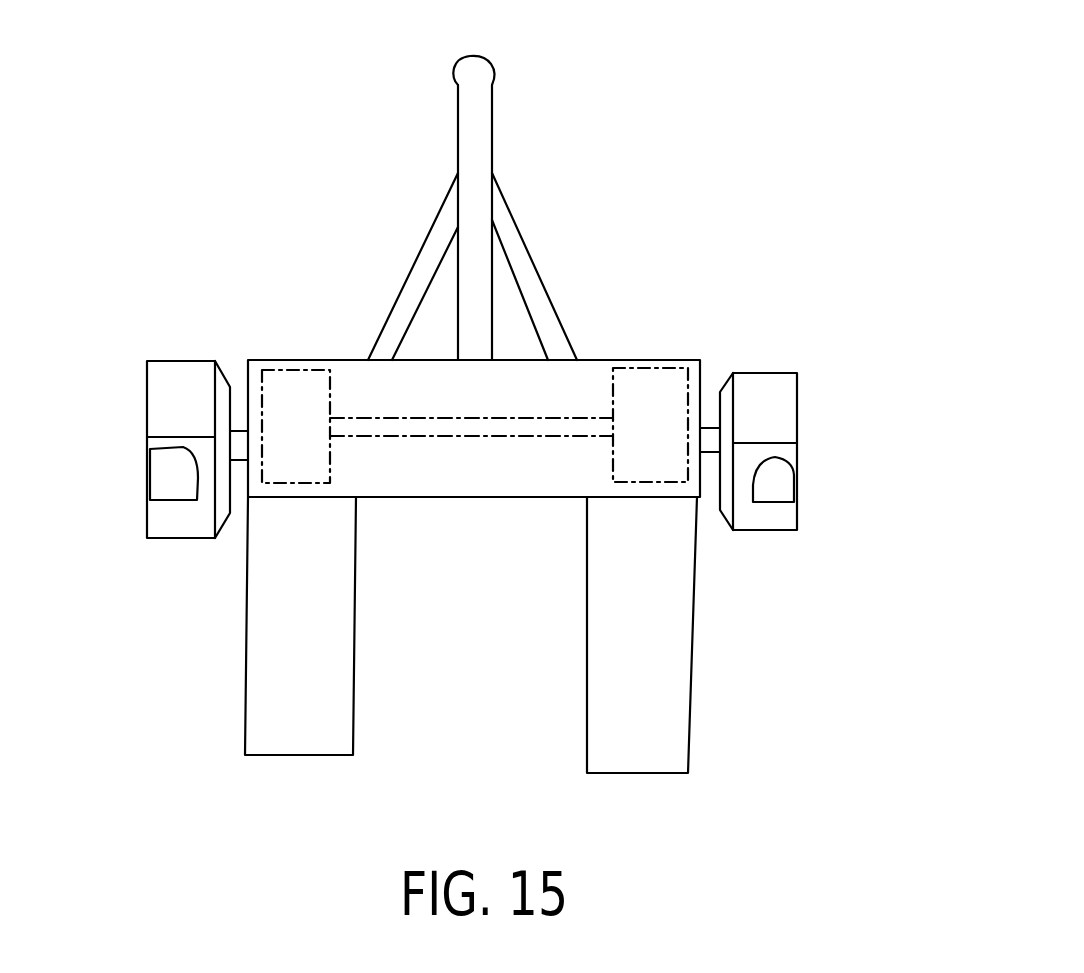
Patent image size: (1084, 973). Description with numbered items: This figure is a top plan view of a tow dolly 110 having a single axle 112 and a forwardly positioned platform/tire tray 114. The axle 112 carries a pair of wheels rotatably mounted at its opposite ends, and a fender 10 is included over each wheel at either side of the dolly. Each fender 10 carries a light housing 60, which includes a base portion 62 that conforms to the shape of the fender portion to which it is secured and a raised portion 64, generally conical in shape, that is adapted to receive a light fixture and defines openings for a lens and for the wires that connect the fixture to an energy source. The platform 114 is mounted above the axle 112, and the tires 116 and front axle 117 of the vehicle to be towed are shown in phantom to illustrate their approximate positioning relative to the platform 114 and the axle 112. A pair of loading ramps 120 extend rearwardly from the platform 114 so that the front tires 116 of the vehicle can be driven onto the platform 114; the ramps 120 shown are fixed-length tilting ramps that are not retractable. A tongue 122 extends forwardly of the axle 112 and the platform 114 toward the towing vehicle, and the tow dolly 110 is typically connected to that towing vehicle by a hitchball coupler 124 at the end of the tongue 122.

The fender 10 is at (124, 386).
The light housing 60 is at (132, 516).
The base portion 62 is at (147, 445).
The raised portion 64 is at (165, 475).
The tow dolly 110 is at (707, 223).
The axle 112 is at (710, 437).
The platform/tire tray 114 is at (367, 392).
The tires 116 is at (650, 390).
The front axle 117 is at (441, 436).
The loading ramps 120 is at (252, 654).
The tongue 122 is at (483, 153).
The hitchball coupler 124 is at (483, 67).